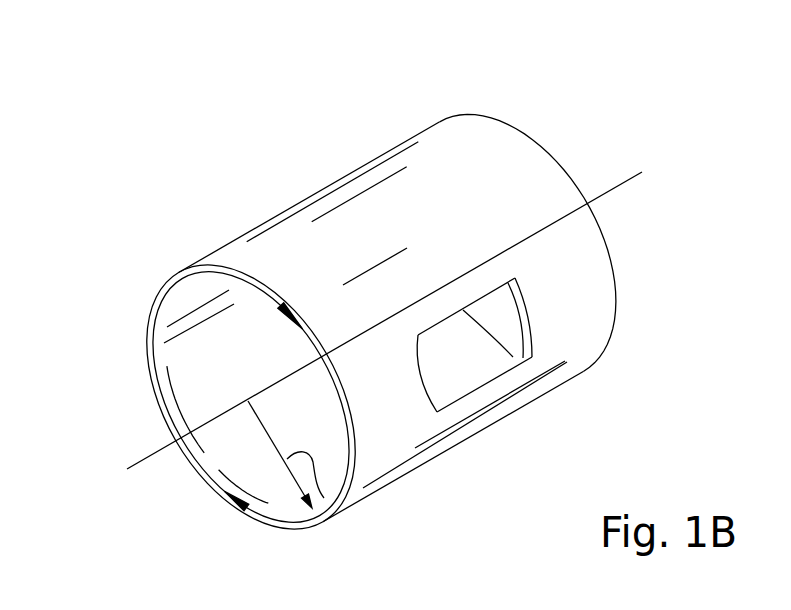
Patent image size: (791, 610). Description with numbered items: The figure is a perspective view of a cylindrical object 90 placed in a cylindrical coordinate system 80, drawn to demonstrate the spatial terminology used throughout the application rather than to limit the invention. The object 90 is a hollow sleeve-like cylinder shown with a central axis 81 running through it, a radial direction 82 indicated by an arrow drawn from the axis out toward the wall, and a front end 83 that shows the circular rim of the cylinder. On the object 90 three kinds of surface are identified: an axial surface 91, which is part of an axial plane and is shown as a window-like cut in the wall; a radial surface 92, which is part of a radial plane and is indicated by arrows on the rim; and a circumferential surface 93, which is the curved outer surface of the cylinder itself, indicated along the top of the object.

The cylindrical coordinate system 80 is at (553, 130).
The longitudinal axis 81 is at (140, 463).
The radius 82 is at (318, 498).
The front end rim 83 is at (157, 298).
The object 90 is at (414, 113).
The axial surface 91 is at (506, 368).
The radial surface 92 is at (264, 517).
The circumferential surface 93 is at (357, 215).